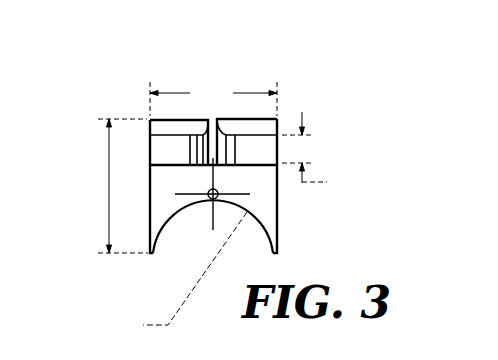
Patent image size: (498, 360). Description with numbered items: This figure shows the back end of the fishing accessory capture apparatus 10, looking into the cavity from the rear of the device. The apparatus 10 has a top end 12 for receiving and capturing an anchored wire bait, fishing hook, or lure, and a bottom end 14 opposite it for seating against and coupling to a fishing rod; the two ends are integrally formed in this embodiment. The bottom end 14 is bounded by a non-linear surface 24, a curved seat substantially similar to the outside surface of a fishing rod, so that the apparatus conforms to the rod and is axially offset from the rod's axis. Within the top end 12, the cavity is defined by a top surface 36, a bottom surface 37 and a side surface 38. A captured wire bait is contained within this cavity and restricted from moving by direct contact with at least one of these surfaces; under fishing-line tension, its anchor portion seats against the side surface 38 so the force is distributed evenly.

The fishing accessory capture apparatus 10 is at (336, 76).
The top end 12 is at (215, 82).
The bottom end 14 is at (250, 267).
The non-linear surface 24 is at (177, 212).
The top surface 36 is at (173, 152).
The bottom surface 37 is at (265, 163).
The side surface 38 is at (168, 137).